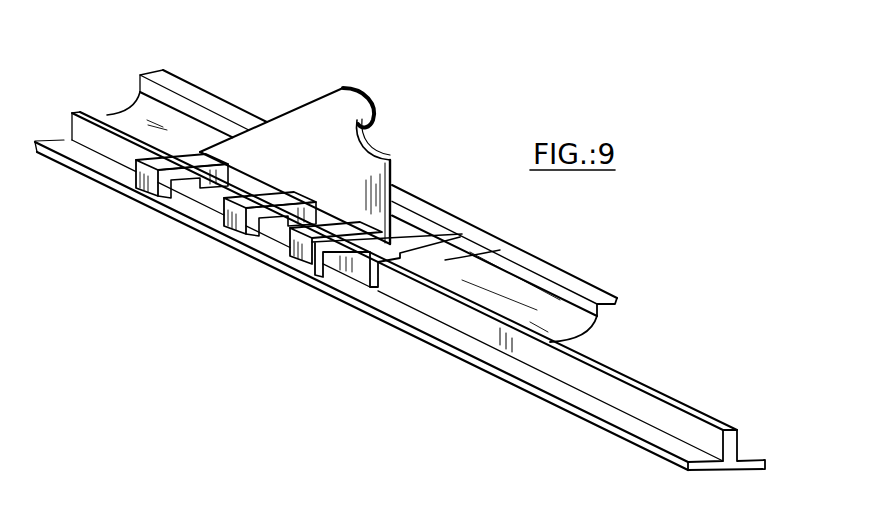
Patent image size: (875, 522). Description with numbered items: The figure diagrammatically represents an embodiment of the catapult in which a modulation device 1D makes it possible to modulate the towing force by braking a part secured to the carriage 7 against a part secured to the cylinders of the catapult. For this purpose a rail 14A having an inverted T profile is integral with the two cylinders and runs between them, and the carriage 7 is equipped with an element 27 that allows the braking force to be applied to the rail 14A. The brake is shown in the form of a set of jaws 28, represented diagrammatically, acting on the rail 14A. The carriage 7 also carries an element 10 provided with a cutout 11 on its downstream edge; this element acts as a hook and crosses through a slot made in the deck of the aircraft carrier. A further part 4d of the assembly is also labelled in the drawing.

The modulation device 1D is at (403, 97).
The curved sheet / carrier profile 4d is at (570, 333).
The carriage 7 is at (410, 225).
The element 10 is at (366, 187).
The cutout 11 is at (372, 122).
The rail 14A is at (738, 443).
The braking element 27 is at (258, 223).
The set of jaws 28 is at (500, 250).